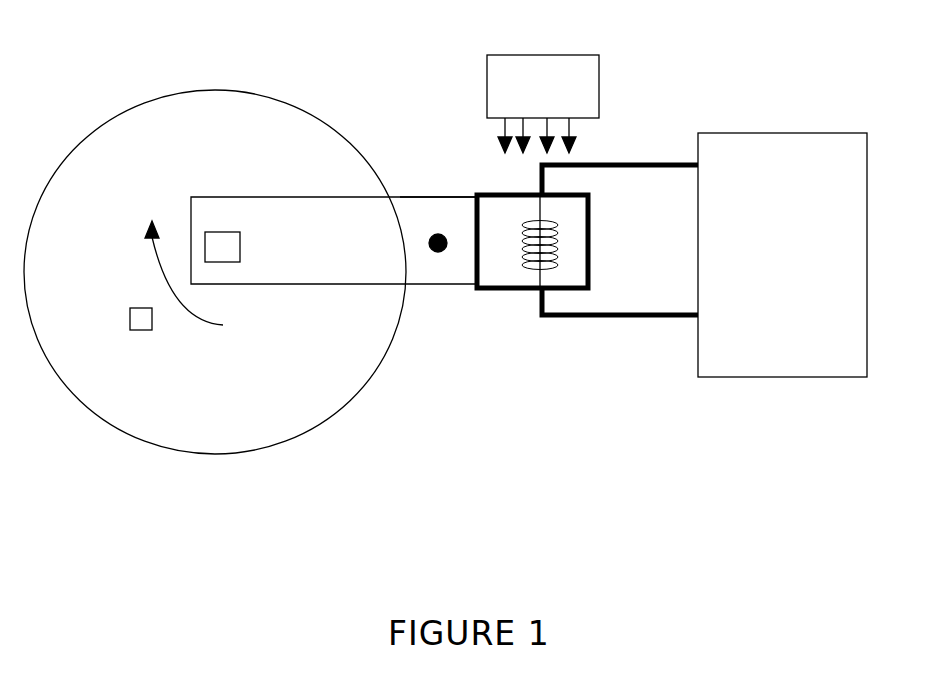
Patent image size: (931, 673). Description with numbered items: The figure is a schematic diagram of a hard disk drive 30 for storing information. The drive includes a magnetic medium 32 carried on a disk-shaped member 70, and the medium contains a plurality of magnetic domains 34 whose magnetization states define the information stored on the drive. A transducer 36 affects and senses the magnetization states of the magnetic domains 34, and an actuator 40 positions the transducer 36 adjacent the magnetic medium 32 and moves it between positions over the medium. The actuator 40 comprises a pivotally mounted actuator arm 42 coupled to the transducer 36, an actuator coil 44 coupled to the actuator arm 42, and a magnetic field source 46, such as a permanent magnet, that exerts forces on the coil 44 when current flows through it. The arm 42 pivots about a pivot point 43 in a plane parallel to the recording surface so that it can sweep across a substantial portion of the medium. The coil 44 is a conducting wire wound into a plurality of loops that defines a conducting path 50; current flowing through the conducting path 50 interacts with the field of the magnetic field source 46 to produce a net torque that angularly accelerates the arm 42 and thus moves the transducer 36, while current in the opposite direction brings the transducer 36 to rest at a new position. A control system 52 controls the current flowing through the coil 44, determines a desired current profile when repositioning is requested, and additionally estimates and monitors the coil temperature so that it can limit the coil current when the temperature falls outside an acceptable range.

The hard disk drive 30 is at (371, 45).
The disk-shaped member 70 is at (307, 112).
The magnetic medium 32 is at (252, 373).
The magnetic domain 34 is at (140, 330).
The transducer 36 is at (229, 229).
The actuator 40 is at (407, 193).
The actuator arm 42 is at (249, 193).
The pivot point 43 is at (434, 230).
The actuator coil 44 is at (497, 193).
The conducting path 50 is at (527, 224).
The magnetic field source 46 is at (556, 47).
The control system 52 is at (737, 131).